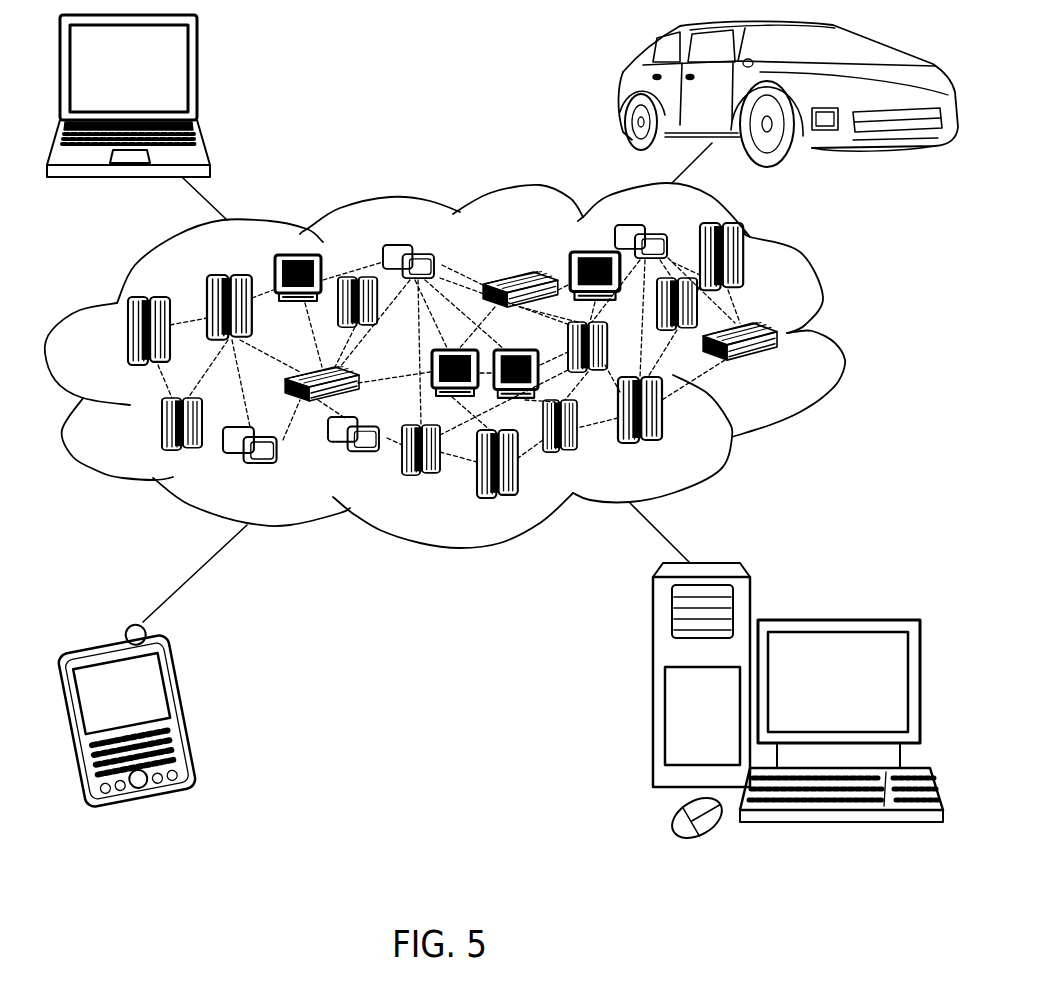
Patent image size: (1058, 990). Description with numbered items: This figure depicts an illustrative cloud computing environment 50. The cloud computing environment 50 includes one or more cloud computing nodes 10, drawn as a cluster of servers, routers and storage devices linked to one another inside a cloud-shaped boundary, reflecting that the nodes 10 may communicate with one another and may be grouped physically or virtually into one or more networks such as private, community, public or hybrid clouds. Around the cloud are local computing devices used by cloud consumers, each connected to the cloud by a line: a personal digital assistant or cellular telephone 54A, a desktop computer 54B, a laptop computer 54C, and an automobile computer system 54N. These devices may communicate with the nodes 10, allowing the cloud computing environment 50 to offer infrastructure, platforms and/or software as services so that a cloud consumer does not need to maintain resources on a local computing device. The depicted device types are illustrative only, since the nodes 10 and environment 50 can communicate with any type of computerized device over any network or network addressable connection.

The cloud computing node 10 is at (778, 367).
The cloud computing environment 50 is at (471, 365).
The personal digital assistant or cellular telephone 54A is at (187, 713).
The desktop computer 54B is at (833, 618).
The laptop computer 54C is at (198, 75).
The automobile computer system 54N is at (622, 89).